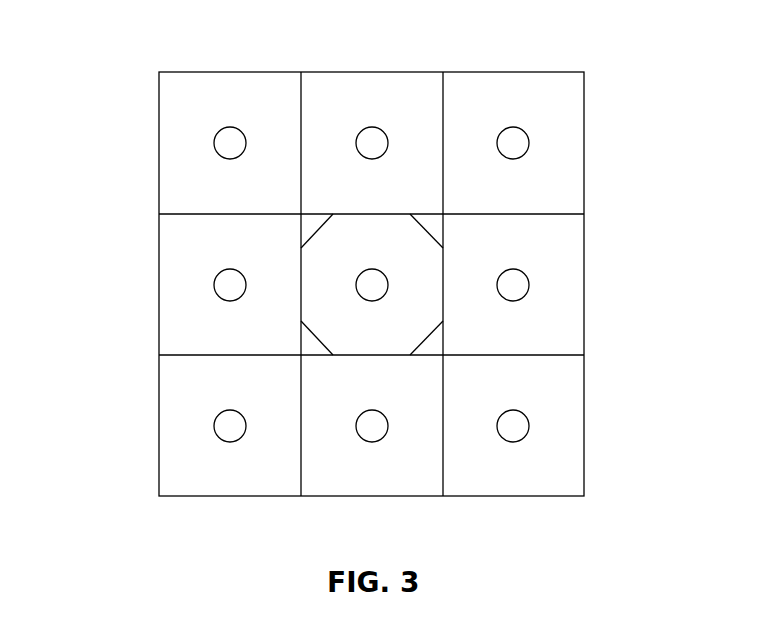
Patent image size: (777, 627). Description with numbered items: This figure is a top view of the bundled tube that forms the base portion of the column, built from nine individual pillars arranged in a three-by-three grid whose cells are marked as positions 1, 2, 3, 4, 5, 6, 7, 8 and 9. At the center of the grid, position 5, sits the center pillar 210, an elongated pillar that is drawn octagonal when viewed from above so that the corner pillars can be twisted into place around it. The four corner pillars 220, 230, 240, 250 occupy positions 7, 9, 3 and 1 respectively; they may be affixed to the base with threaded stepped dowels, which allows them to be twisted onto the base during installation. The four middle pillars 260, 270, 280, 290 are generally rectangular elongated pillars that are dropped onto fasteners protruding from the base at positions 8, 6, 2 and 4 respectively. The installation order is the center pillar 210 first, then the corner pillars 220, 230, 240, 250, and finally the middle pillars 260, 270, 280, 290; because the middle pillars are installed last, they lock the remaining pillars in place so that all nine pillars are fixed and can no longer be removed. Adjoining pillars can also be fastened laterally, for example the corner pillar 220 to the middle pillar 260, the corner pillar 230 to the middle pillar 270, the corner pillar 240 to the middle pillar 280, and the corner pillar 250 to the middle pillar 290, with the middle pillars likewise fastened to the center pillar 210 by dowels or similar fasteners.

The position 1 is at (187, 206).
The position 2 is at (328, 206).
The position 3 is at (470, 206).
The position 4 is at (187, 347).
The position 5 is at (355, 347).
The position 6 is at (470, 347).
The position 7 is at (187, 489).
The position 8 is at (328, 489).
The position 9 is at (470, 489).
The center pillar 210 is at (393, 258).
The corner pillar 220 is at (183, 427).
The corner pillar 230 is at (560, 427).
The corner pillar 240 is at (560, 143).
The corner pillar 250 is at (183, 143).
The middle pillar 260 is at (372, 480).
The middle pillar 270 is at (560, 285).
The middle pillar 280 is at (372, 90).
The middle pillar 290 is at (183, 285).